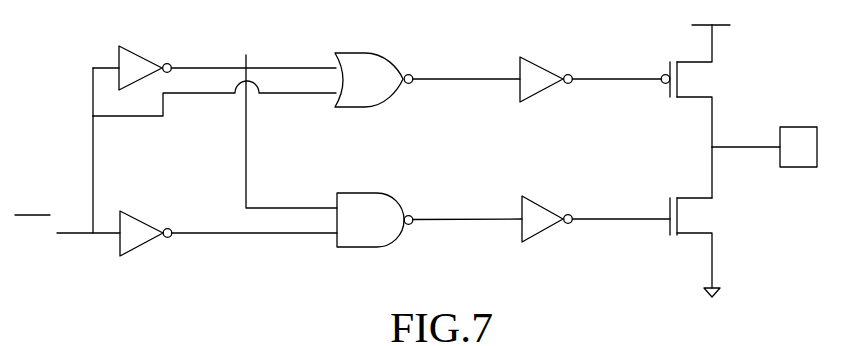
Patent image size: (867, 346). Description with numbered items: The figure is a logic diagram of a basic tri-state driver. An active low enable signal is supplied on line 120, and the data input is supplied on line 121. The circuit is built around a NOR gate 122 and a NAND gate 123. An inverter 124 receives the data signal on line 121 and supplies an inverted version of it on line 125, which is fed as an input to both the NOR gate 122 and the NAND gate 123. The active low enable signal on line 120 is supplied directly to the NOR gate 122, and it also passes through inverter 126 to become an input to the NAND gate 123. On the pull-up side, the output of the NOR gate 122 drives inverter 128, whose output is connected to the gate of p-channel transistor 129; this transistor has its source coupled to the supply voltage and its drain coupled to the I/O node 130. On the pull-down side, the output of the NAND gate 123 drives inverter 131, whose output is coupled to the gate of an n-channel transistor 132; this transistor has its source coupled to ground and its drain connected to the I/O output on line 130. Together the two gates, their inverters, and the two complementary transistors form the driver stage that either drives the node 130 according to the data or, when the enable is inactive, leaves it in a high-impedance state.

The line 120 is at (82, 235).
The line 121 is at (106, 67).
The NOR gate 122 is at (367, 52).
The NAND gate 123 is at (370, 193).
The inverter 124 is at (144, 53).
The line 125 is at (246, 55).
The inverter 126 is at (143, 247).
The inverter 128 is at (541, 65).
The p-channel transistor 129 is at (695, 63).
The I/O node 130 is at (732, 146).
The inverter 131 is at (550, 205).
The n-channel transistor 132 is at (701, 199).